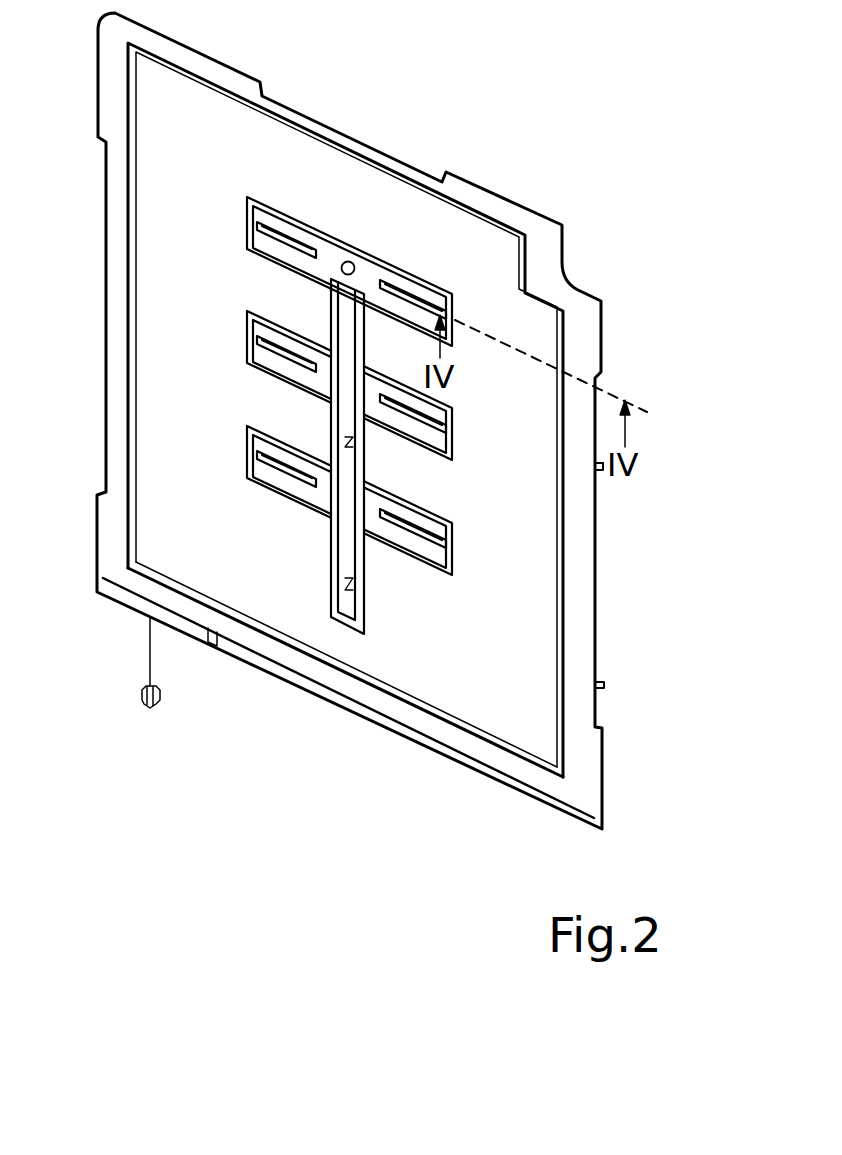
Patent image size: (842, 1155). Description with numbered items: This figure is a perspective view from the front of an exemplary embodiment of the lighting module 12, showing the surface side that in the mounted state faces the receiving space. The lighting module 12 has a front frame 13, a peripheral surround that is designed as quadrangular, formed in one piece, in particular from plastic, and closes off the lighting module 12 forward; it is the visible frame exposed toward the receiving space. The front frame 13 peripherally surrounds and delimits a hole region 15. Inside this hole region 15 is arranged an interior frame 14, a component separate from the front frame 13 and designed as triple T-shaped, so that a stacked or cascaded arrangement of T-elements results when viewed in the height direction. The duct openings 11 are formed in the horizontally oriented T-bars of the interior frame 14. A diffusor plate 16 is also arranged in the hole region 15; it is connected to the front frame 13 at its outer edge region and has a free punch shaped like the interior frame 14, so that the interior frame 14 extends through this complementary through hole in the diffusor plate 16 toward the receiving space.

The duct openings 11 is at (388, 290).
The lighting module 12 is at (479, 145).
The front frame 13 is at (573, 203).
The interior frame 14 is at (334, 640).
The hole region 15 is at (396, 684).
The diffusor plate 16 is at (513, 708).